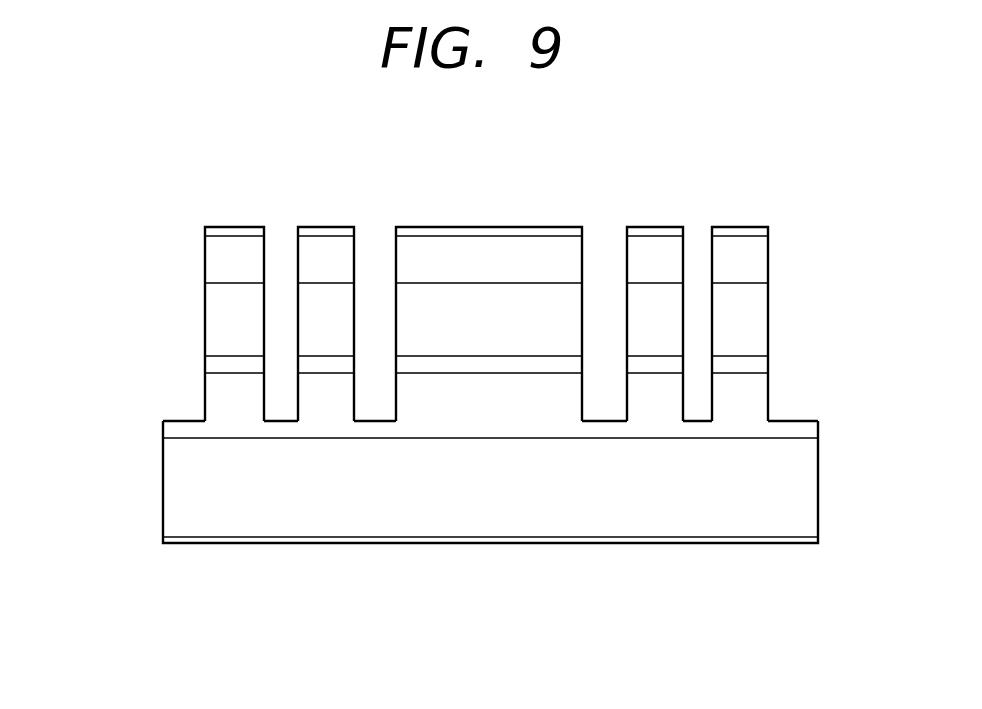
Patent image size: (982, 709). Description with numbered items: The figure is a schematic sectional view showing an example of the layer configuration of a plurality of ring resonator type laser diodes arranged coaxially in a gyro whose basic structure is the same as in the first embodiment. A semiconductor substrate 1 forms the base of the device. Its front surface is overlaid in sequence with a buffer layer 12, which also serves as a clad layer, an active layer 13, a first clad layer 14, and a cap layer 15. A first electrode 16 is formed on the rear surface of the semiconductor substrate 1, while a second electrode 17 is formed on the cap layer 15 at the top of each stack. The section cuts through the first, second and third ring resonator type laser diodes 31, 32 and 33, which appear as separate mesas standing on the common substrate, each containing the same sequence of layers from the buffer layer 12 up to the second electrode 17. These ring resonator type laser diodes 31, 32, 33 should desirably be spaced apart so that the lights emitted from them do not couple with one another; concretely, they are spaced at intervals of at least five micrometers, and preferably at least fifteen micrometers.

The semiconductor substrate 1 is at (223, 528).
The buffer layer 12 is at (213, 405).
The active layer 13 is at (213, 363).
The first clad layer 14 is at (213, 310).
The cap layer 15 is at (213, 250).
The first electrode 16 is at (333, 540).
The second electrode 17 is at (217, 230).
The first ring resonator type laser diode 31 is at (488, 221).
The second ring resonator type laser diode 32 is at (325, 221).
The third ring resonator type laser diode 33 is at (240, 221).